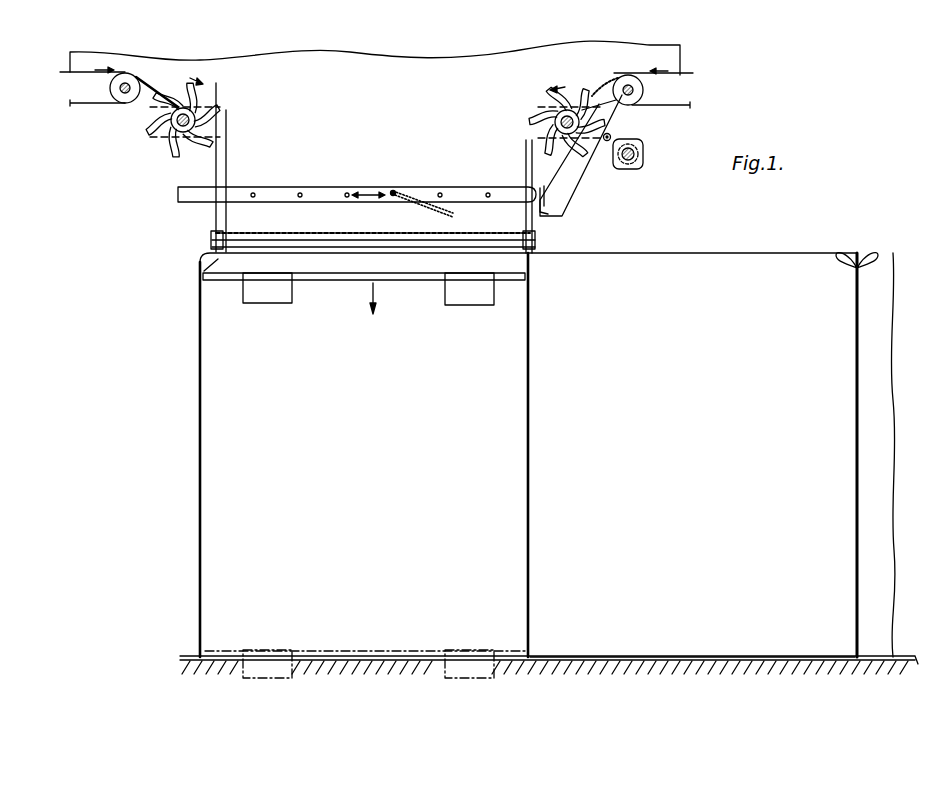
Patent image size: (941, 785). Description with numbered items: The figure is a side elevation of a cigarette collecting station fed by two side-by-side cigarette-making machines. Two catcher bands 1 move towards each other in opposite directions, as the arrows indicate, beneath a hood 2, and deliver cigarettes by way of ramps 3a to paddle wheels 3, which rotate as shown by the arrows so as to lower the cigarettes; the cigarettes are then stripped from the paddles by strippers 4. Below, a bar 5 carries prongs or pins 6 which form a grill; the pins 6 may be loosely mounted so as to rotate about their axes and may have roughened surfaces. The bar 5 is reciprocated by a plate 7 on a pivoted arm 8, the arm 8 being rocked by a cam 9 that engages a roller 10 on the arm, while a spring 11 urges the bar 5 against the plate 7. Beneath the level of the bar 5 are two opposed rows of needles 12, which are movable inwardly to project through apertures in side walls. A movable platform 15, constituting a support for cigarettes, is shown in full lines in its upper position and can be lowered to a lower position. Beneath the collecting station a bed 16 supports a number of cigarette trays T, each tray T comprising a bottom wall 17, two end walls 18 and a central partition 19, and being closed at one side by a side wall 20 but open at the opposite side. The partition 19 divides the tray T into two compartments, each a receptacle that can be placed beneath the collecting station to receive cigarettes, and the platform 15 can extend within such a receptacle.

The catcher band 1 is at (110, 103).
The housing hood 2 is at (375, 92).
The paddle wheel 3 is at (205, 108).
The ramp 3a is at (594, 92).
The stripper 4 is at (226, 128).
The bar 5 is at (276, 188).
The pins 6 is at (303, 190).
The plate 7 is at (548, 214).
The pivoted arm 8 is at (581, 176).
The cam 9 is at (644, 152).
The roller 10 is at (618, 124).
The spring 11 is at (424, 211).
The needles 12 is at (362, 236).
The movable platform 15 is at (446, 282).
The bed 16 is at (192, 655).
The bottom wall 17 is at (606, 656).
The end walls 18 is at (200, 463).
The partition 19 is at (533, 418).
The side wall 20 is at (650, 255).
The cigarette tray T is at (195, 350).